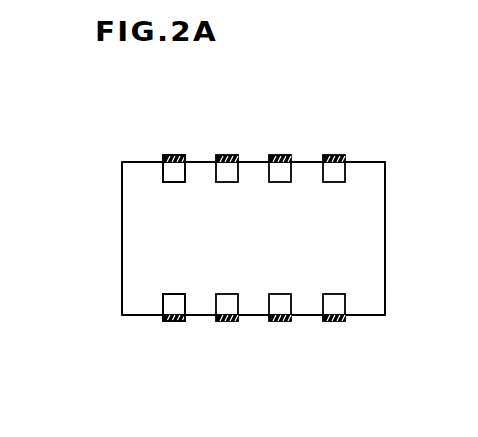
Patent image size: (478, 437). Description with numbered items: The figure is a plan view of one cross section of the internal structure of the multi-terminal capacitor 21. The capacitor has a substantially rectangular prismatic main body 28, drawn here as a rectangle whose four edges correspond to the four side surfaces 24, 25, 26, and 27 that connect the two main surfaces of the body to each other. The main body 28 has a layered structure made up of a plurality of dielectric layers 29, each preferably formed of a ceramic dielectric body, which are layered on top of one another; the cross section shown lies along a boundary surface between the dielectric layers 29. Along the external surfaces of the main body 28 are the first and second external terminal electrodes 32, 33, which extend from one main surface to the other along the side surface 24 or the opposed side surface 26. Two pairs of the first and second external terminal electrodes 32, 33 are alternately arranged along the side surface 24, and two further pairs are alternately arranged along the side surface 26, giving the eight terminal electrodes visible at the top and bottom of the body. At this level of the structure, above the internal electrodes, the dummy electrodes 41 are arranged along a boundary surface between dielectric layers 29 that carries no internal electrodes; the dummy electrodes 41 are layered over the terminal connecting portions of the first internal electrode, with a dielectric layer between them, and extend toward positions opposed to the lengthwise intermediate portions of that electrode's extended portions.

The multi-terminal capacitor 21 is at (125, 103).
The side surface 24 is at (259, 158).
The side surface 25 is at (133, 232).
The side surface 26 is at (250, 320).
The side surface 27 is at (388, 262).
The main body 28 is at (388, 165).
The dielectric layer 29 is at (378, 222).
The first external terminal electrode 32 is at (174, 155).
The second external terminal electrode 33 is at (229, 155).
The dummy electrode 41 is at (171, 173).